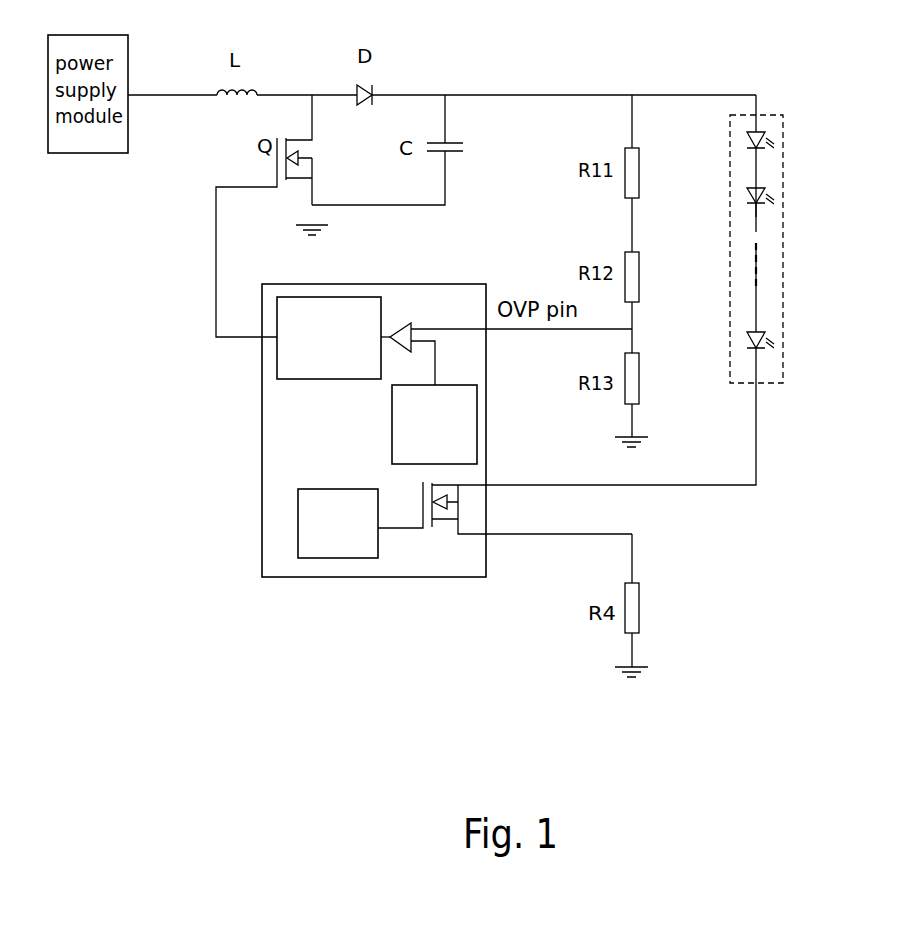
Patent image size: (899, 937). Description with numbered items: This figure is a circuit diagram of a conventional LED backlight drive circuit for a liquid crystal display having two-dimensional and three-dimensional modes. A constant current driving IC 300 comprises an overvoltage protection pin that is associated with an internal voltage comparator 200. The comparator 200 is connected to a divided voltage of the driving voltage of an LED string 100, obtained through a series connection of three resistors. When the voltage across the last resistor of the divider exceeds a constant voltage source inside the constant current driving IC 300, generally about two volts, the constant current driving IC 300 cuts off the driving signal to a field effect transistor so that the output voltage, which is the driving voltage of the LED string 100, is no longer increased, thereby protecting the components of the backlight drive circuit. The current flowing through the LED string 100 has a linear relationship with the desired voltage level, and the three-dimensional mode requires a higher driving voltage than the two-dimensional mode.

The LED string 100 is at (783, 218).
The internal voltage comparator 200 is at (412, 322).
The constant current driving IC 300 is at (423, 446).